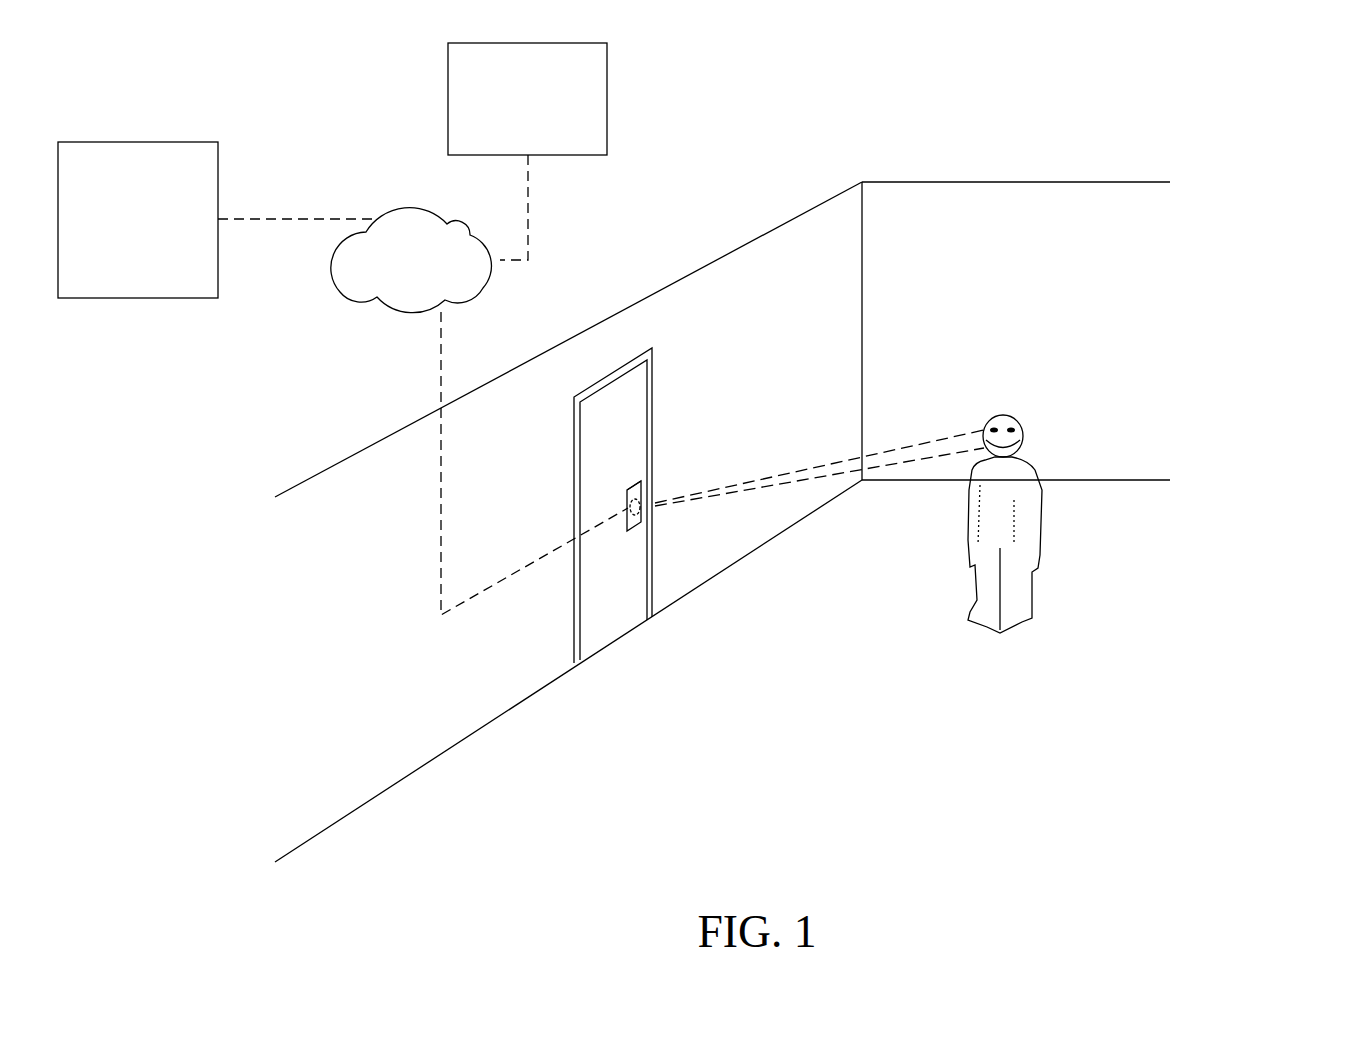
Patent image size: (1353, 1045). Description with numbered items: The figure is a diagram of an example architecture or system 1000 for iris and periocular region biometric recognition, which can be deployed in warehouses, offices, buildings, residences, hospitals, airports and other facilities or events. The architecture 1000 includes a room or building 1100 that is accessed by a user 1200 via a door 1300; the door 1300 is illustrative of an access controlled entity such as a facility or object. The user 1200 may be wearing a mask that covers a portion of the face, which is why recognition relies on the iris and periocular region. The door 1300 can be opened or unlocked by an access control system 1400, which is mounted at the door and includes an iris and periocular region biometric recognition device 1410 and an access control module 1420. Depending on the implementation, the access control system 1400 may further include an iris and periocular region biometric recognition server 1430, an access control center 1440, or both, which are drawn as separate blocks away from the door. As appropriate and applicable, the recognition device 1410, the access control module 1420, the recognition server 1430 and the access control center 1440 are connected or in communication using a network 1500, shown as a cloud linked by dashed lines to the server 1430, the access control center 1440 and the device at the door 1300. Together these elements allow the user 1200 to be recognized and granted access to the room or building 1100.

The architecture or system 1000 is at (1180, 86).
The room or building 1100 is at (175, 405).
The user 1200 is at (1058, 624).
The door 1300 is at (592, 433).
The access control system 1400 is at (589, 583).
The iris and periocular region biometric recognition device 1410 is at (641, 482).
The access control module 1420 is at (648, 518).
The iris and periocular region biometric recognition server 1430 is at (138, 220).
The access control center 1440 is at (527, 99).
The network 1500 is at (335, 338).